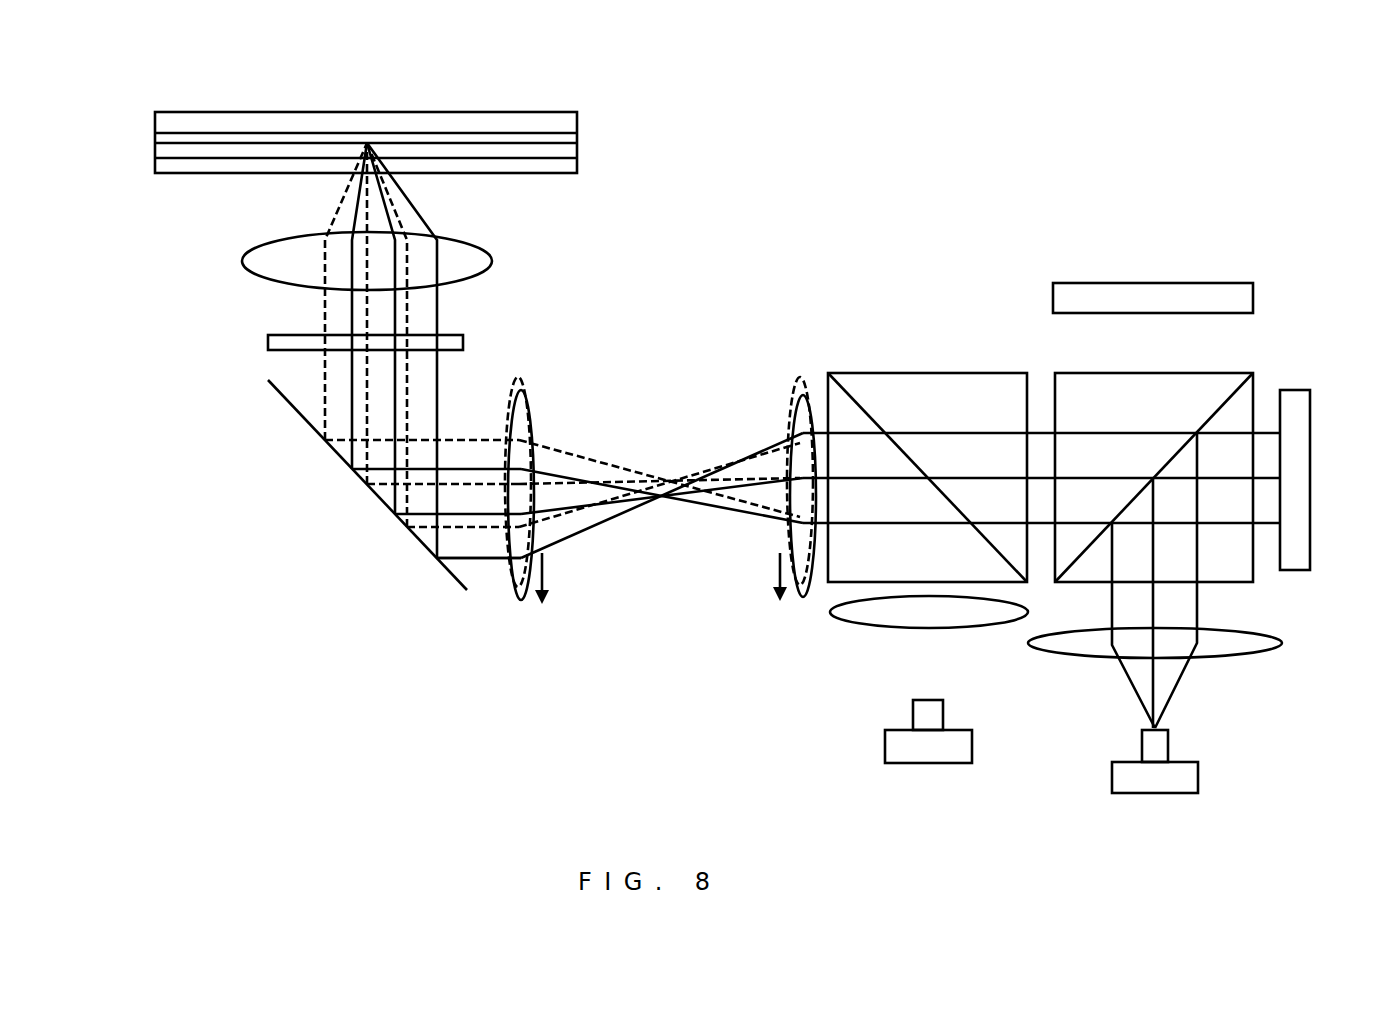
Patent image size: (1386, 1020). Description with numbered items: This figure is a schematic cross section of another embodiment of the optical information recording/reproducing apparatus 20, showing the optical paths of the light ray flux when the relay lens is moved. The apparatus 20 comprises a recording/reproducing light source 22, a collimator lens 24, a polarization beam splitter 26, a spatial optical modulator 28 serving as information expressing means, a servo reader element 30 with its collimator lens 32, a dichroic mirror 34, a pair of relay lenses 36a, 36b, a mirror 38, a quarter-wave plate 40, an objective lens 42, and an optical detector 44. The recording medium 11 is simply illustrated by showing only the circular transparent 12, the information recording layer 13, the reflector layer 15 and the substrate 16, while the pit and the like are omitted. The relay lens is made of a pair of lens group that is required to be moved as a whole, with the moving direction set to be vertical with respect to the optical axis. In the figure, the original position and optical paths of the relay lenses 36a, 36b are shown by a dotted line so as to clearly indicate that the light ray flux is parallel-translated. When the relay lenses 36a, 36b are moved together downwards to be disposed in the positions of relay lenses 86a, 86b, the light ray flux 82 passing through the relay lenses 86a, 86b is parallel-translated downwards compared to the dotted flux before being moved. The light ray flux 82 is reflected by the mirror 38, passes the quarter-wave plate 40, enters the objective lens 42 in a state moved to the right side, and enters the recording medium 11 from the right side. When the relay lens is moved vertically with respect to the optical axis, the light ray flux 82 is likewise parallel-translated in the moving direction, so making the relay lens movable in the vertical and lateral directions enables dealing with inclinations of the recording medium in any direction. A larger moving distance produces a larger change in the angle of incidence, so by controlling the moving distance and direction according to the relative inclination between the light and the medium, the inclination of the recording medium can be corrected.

The recording medium 11 is at (518, 95).
The substrate 16 is at (577, 118).
The reflector layer 15 is at (577, 134).
The information recording layer 13 is at (577, 149).
The circular transparent 12 is at (577, 166).
The optical information recording/reproducing apparatus 20 is at (1012, 221).
The objective lens 42 is at (242, 268).
The quarter-wave plate 40 is at (268, 343).
The mirror 38 is at (297, 411).
The light ray flux 82 is at (478, 560).
The relay lens 36b is at (522, 383).
The relay lens 86b is at (530, 402).
The relay lens 36a is at (800, 380).
The relay lens 86a is at (795, 401).
The dichroic mirror 34 is at (968, 373).
The polarization beam splitter 26 is at (1253, 373).
The optical detector 44 is at (1253, 288).
The spatial optical modulator 28 is at (1310, 410).
The collimator lens 32 is at (832, 612).
The collimator lens 24 is at (1282, 642).
The servo reader element 30 is at (885, 745).
The recording/reproducing light source 22 is at (1198, 770).